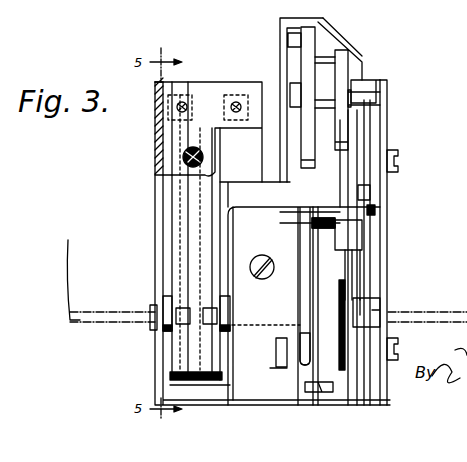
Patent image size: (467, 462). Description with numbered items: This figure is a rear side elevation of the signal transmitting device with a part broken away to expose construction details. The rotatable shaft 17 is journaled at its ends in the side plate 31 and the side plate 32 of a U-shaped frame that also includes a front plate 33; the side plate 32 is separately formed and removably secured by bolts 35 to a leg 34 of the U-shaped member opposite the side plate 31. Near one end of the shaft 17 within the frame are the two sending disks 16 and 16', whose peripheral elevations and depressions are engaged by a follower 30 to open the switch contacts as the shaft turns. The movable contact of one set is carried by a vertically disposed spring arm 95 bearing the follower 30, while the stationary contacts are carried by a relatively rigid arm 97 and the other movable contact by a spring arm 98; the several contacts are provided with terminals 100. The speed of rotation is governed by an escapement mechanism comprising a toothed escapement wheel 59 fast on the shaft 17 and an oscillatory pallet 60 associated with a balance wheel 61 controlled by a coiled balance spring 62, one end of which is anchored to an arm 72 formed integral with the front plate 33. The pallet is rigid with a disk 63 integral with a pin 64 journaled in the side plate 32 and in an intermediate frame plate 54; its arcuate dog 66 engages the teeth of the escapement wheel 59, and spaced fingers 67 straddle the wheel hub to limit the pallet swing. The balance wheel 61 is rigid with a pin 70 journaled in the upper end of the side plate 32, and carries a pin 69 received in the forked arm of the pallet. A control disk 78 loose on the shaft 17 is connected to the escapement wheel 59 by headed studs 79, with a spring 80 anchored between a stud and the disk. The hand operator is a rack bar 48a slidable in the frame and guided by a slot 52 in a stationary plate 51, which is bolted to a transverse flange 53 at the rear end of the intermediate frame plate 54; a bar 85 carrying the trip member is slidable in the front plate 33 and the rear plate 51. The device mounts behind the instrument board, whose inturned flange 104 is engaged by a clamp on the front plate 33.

The terminals 100 is at (234, 104).
The side plate 31 is at (162, 178).
The relatively rigid arm 97 is at (178, 190).
The spring arm 98 is at (176, 198).
The spring arm 95 is at (222, 194).
The disk 16 is at (172, 254).
The disk 16' is at (161, 249).
The inturned flange 104 is at (120, 312).
The follower 30 is at (172, 336).
The stationary plate 51 is at (245, 390).
The coiled balance spring 62 is at (308, 52).
The arm 72 is at (340, 60).
The balance wheel 61 is at (347, 90).
The pin 70 is at (373, 90).
The leg 34 is at (378, 112).
The side plate 32 is at (388, 118).
The pin 69 is at (365, 112).
The bolts 35 is at (398, 160).
The oscillatory pallet 60 is at (374, 191).
The front plate 33 is at (348, 190).
The disk 63 is at (374, 214).
The arcuate dog 66 is at (360, 236).
The toothed escapement wheel 59 is at (350, 272).
The spaced fingers 67 is at (360, 285).
The rotatable shaft 17 is at (388, 312).
The pin 64 is at (323, 218).
The control disk 78 is at (312, 258).
The headed studs 79 is at (335, 290).
The flange 53 is at (302, 290).
The spring 80 is at (338, 312).
The rack bar 48a is at (276, 353).
The slot 52 is at (270, 368).
The intermediate frame plate 54 is at (304, 355).
The bar 85 is at (320, 390).